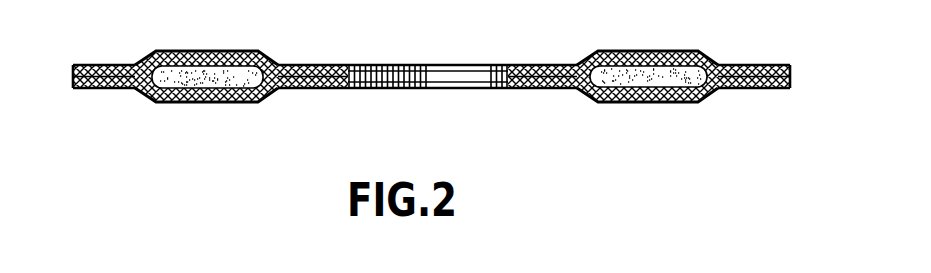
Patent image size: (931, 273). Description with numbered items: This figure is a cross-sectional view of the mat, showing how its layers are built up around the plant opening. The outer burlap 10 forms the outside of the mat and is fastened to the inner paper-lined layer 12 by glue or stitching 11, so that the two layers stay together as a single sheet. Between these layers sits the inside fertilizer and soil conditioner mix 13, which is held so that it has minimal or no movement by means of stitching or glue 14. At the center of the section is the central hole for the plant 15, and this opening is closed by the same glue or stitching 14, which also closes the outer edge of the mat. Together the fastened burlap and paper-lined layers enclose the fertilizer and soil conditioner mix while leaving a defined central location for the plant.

The outer burlap 10 is at (193, 52).
The glue or stitching 11 is at (162, 103).
The inner paper-lined layer 12 is at (227, 103).
The fertilizer and soil conditioner mix 13 is at (220, 68).
The stitching or glue 14 is at (92, 65).
The central hole for the plant 15 is at (455, 66).